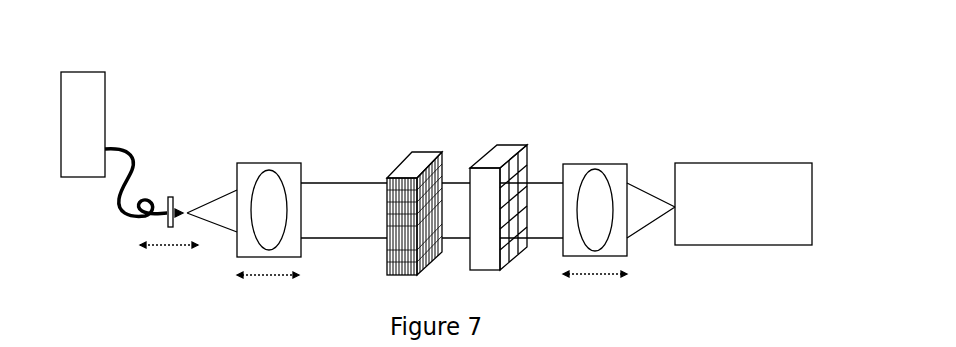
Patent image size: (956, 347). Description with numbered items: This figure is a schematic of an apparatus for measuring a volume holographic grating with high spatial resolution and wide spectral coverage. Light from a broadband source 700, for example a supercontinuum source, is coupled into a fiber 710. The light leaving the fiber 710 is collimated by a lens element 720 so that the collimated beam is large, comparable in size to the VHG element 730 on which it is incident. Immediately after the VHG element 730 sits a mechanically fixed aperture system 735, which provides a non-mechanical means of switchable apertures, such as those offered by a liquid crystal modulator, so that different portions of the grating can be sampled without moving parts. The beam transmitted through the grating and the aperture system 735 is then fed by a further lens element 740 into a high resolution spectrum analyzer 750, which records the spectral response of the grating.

The broadband source 700 is at (82, 70).
The fiber 710 is at (131, 148).
The lens element 720 is at (262, 163).
The VHG element 730 is at (417, 150).
The fixed aperture system 735 is at (492, 145).
The lens element 740 is at (595, 164).
The high resolution spectrum analyzer 750 is at (705, 165).